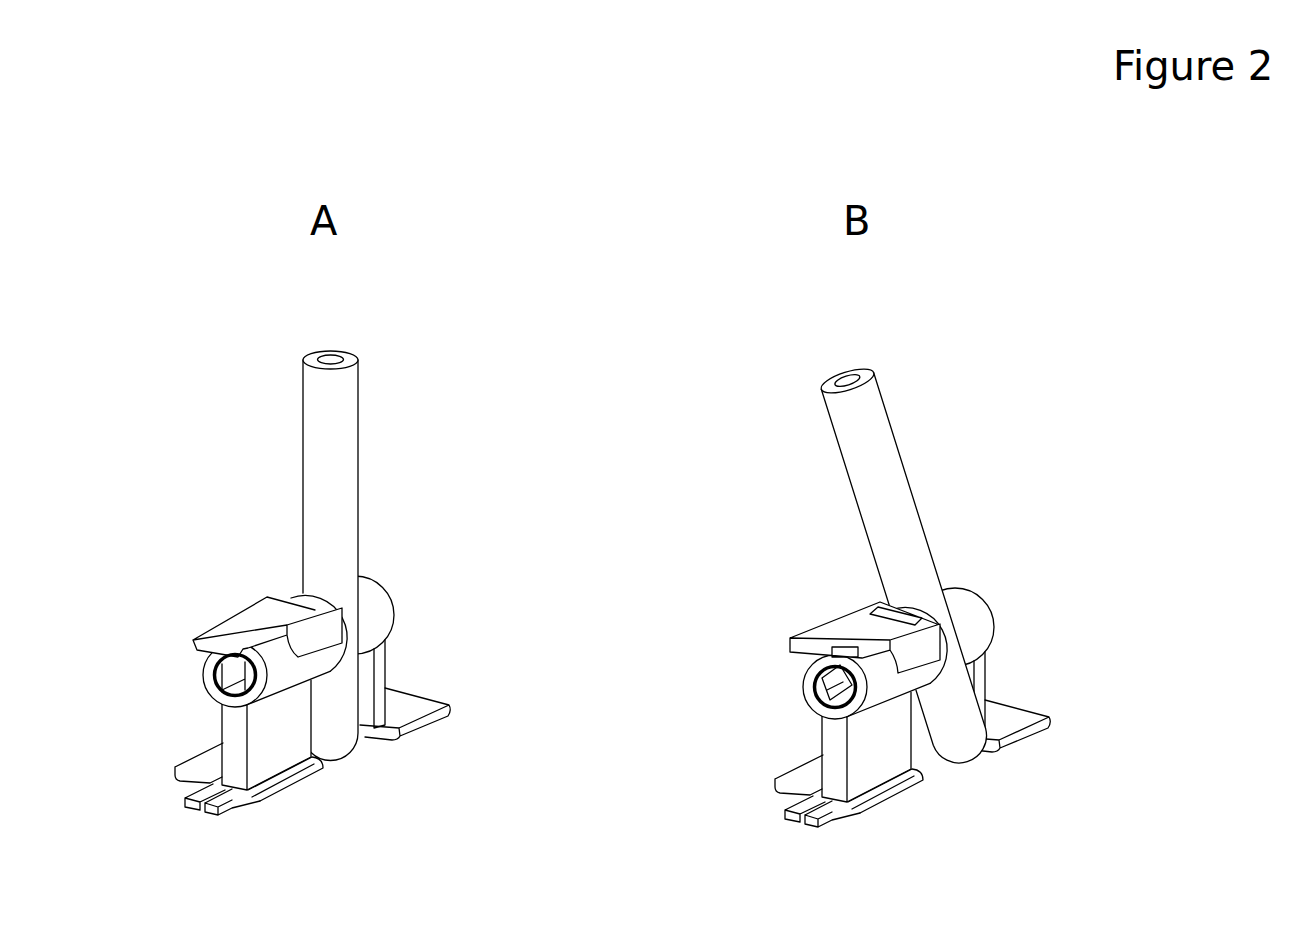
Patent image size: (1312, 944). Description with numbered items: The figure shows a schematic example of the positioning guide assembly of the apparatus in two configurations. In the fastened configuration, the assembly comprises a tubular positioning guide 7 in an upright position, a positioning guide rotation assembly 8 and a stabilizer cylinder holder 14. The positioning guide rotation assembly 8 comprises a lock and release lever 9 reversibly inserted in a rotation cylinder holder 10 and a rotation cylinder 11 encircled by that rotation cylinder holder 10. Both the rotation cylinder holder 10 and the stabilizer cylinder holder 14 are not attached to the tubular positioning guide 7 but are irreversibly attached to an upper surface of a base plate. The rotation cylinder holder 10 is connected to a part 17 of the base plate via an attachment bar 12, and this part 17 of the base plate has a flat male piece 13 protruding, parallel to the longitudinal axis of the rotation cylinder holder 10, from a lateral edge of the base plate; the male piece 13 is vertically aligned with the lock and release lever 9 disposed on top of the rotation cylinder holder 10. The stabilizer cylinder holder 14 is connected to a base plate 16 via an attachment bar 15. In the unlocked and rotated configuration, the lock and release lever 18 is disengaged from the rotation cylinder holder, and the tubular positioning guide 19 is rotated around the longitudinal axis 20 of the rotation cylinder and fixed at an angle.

The tubular positioning guide 7 is at (293, 378).
The positioning guide rotation assembly 8 is at (257, 593).
The lock and release lever 9 is at (243, 632).
The rotation cylinder holder 10 is at (208, 663).
The rotation cylinder 11 is at (224, 688).
The attachment bar 12 is at (203, 777).
The flat male piece 13 is at (213, 817).
The stabilizer cylinder holder 14 is at (377, 578).
The attachment bar 15 is at (387, 655).
The base plate 16 is at (410, 738).
The part of the base plate 17 is at (292, 795).
The lock and release lever 18 is at (800, 636).
The tubular positioning guide 19 is at (827, 370).
The longitudinal axis 20 is at (812, 700).